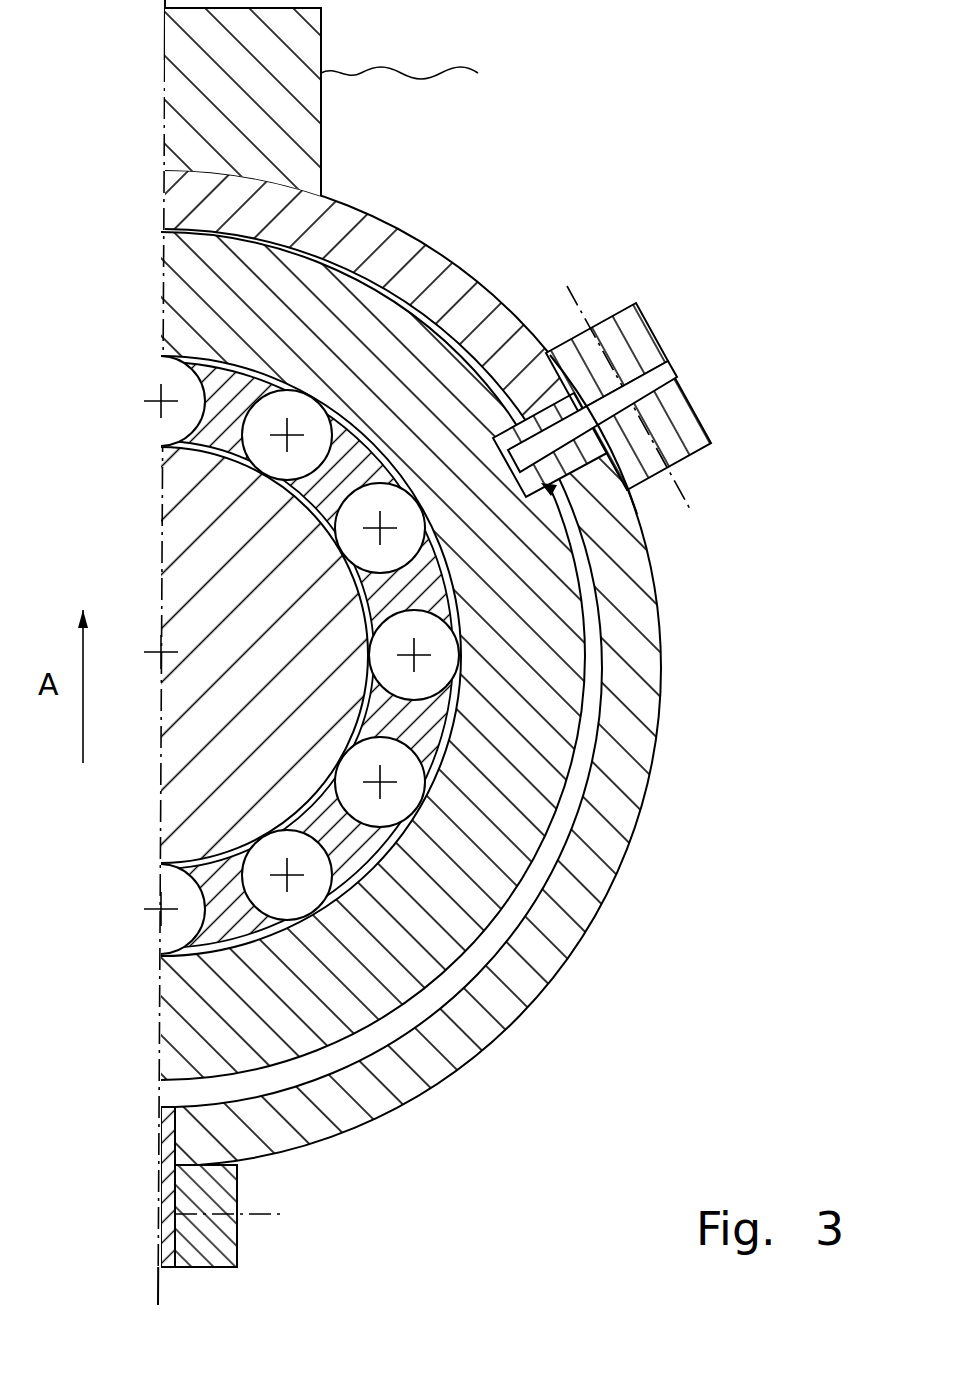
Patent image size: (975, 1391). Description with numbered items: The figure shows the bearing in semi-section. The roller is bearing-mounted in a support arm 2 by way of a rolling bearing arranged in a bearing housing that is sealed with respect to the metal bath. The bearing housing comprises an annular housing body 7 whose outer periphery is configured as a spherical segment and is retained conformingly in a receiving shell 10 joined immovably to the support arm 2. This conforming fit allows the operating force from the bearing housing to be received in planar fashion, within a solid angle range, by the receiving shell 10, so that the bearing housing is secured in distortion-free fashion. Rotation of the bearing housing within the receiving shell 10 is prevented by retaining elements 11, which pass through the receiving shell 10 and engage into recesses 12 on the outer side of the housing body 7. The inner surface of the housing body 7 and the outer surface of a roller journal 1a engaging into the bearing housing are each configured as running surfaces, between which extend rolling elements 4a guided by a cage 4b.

The support arm 2 is at (228, 77).
The receiving shell 10 is at (226, 186).
The housing body 7 is at (223, 320).
The rolling elements 4a is at (165, 378).
The cage 4b is at (205, 430).
The roller journal 1a is at (165, 522).
The retaining elements 11 is at (678, 387).
The recesses 12 is at (553, 490).